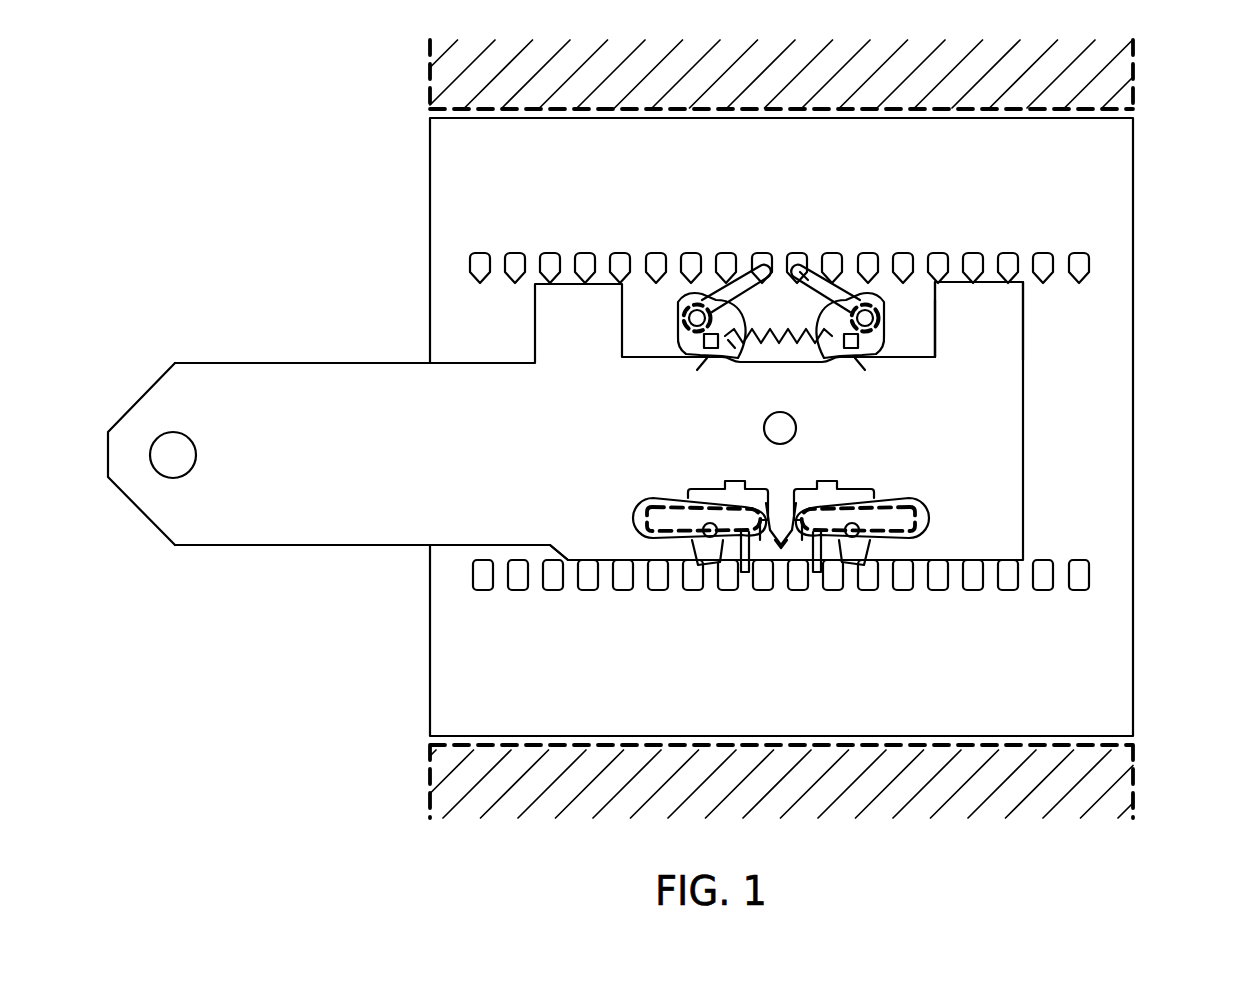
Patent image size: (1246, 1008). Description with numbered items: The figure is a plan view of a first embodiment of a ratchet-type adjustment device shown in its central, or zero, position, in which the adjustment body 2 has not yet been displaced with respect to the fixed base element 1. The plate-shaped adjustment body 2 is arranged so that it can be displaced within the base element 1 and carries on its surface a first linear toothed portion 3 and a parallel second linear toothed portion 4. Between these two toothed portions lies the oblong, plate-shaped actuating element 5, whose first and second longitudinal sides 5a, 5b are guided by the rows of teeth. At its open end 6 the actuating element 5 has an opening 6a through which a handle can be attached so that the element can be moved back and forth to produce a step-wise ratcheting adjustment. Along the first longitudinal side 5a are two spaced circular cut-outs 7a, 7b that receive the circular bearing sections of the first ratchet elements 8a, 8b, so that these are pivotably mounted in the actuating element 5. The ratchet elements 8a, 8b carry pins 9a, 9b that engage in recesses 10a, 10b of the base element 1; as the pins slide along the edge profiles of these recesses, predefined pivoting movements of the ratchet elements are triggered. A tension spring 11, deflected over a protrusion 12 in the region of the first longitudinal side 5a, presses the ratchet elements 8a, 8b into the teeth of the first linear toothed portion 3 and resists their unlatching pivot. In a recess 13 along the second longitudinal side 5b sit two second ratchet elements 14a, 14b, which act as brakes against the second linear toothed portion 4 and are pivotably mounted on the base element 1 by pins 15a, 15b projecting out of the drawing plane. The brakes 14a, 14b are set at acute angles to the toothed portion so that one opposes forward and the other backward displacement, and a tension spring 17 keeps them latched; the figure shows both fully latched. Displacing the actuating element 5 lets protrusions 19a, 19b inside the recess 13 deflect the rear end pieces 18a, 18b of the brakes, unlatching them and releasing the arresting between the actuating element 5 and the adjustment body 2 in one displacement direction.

The base element 1 is at (1125, 778).
The adjustment body 2 is at (1113, 676).
The first linear toothed portion 3 is at (1089, 575).
The second linear toothed portion 4 is at (1087, 263).
The actuating element 5 is at (232, 520).
The first longitudinal side 5a is at (570, 561).
The second longitudinal side 5b is at (990, 265).
The open end 6 is at (107, 457).
The opening 6a is at (197, 455).
The circular cut-out 7a is at (640, 542).
The circular cut-out 7b is at (920, 515).
The first ratchet element 8a is at (742, 545).
The first ratchet element 8b is at (872, 548).
The pin 9a is at (708, 540).
The pin 9b is at (855, 540).
The recess 10a is at (723, 485).
The recess 10b is at (845, 483).
The tension spring 11 is at (782, 550).
The protrusion 12 is at (793, 497).
The recess 13 is at (915, 328).
The second ratchet element 14a is at (752, 280).
The second ratchet element 14b is at (842, 292).
The pin 15a is at (696, 312).
The pin 15b is at (862, 310).
The tension spring 17 is at (803, 340).
The rear end piece 18a is at (672, 352).
The rear end piece 18b is at (880, 357).
The protrusion 19a is at (702, 365).
The protrusion 19b is at (868, 362).